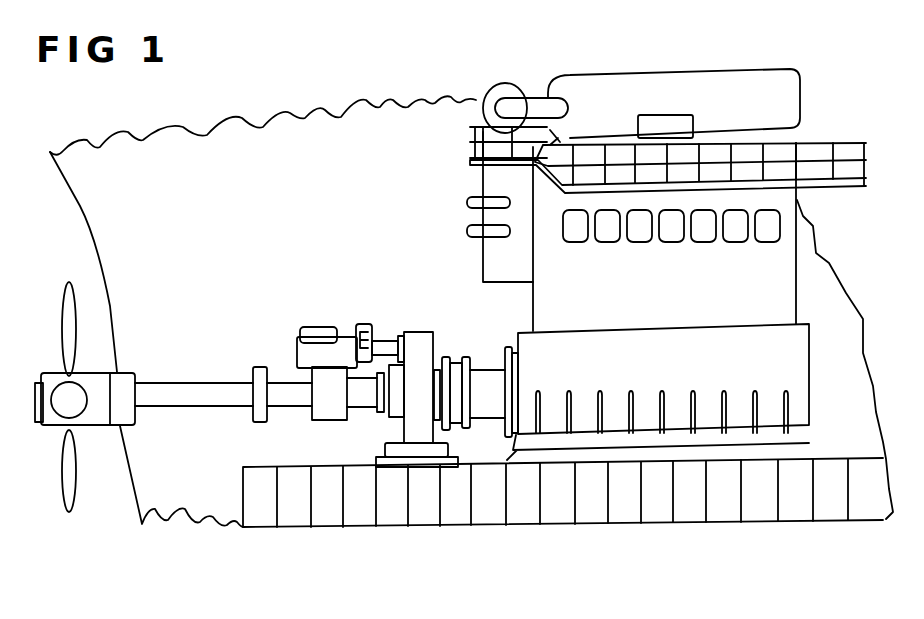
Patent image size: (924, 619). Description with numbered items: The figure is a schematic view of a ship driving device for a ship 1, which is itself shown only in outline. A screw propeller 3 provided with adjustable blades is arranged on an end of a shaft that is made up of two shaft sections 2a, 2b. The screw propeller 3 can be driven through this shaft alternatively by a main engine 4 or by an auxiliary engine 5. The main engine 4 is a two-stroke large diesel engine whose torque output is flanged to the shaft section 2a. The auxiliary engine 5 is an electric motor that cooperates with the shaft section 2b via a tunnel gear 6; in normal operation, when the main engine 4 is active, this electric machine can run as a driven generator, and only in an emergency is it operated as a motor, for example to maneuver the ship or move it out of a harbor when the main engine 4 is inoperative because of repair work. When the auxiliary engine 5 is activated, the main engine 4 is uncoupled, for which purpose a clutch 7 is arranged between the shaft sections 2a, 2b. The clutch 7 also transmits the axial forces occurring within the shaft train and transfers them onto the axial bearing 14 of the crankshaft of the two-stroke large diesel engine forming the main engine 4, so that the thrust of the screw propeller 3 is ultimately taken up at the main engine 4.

The ship 1 is at (125, 200).
The shaft section 2a is at (490, 366).
The shaft section 2b is at (200, 394).
The screw propeller 3 is at (68, 479).
The main engine 4 is at (739, 281).
The auxiliary engine 5 is at (345, 349).
The tunnel gear 6 is at (416, 359).
The clutch 7 is at (455, 427).
The axial bearing 14 is at (512, 392).